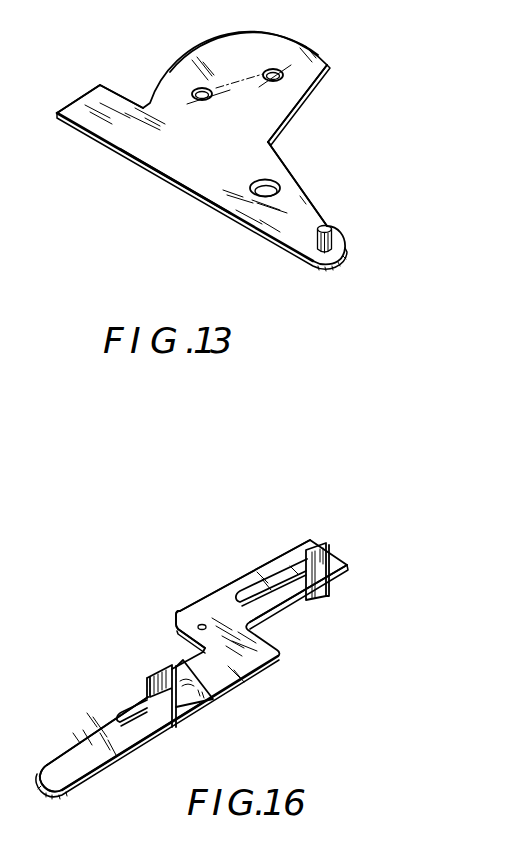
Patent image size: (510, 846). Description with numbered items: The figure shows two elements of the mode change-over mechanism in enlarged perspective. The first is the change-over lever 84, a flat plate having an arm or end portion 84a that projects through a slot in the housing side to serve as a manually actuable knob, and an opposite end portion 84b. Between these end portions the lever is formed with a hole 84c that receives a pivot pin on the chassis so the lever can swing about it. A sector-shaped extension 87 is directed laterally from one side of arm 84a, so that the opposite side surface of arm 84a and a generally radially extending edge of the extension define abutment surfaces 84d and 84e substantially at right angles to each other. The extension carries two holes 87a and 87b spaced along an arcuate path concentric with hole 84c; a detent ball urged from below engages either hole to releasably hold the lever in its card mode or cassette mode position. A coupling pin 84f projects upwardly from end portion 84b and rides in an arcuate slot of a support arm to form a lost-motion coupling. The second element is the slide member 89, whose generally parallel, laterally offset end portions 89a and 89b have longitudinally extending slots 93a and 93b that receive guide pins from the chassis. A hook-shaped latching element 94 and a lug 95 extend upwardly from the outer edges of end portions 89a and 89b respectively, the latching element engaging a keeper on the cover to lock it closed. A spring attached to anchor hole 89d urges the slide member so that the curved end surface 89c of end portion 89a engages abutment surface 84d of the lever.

In FIG. 13, the change-over lever 84 is at (143, 183).
In FIG. 13, the arm or end portion 84a is at (117, 124).
In FIG. 13, the opposite end portion 84b is at (377, 211).
In FIG. 13, the hole 84c is at (254, 195).
In FIG. 13, the abutment surface 84d is at (167, 172).
In FIG. 13, the abutment surface 84e is at (384, 99).
In FIG. 13, the coupling pin 84f is at (401, 254).
In FIG. 13, the sector-shaped extension 87 is at (258, 38).
In FIG. 13, the hole 87a is at (193, 92).
In FIG. 13, the hole 87b is at (281, 71).
In FIG. 16, the slide member 89 is at (268, 682).
In FIG. 16, the end portion 89a is at (90, 735).
In FIG. 16, the end portion 89b is at (207, 599).
In FIG. 16, the curved end surface 89c is at (49, 792).
In FIG. 16, the anchor hole 89d is at (176, 617).
In FIG. 16, the slot 93a is at (132, 703).
In FIG. 16, the slot 93b is at (278, 575).
In FIG. 16, the hook-shaped latching element 94 is at (184, 689).
In FIG. 16, the lug 95 is at (318, 578).